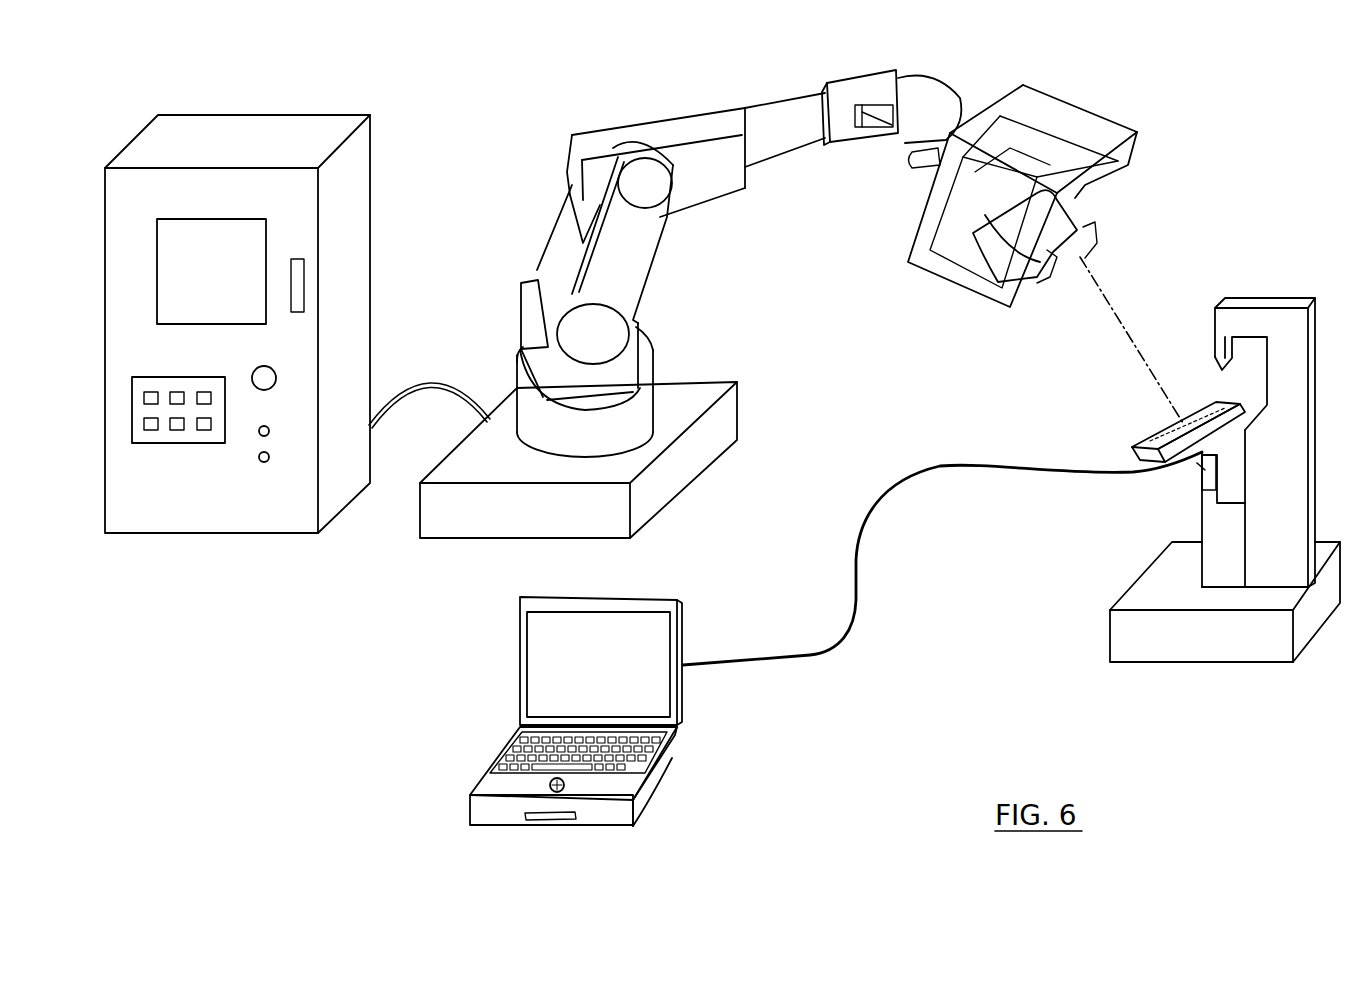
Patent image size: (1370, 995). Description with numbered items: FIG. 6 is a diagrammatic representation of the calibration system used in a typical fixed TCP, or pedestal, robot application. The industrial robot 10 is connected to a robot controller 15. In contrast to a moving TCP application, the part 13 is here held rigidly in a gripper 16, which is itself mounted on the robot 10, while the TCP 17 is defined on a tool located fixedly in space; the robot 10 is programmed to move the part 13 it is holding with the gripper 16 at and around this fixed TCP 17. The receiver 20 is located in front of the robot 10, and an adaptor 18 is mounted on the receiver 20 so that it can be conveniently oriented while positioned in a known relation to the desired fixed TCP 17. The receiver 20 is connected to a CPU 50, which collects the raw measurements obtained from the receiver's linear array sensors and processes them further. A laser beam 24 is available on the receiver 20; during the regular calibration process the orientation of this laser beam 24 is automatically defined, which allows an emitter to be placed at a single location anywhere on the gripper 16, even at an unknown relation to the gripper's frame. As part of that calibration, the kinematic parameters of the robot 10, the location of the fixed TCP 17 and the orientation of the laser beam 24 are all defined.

The robot 10 is at (677, 114).
The part 13 is at (1000, 255).
The robot controller 15 is at (235, 513).
The gripper 16 is at (1148, 125).
The TCP 17 is at (1200, 468).
The adaptor 18 is at (1197, 458).
The receiver 20 is at (1133, 447).
The laser beam 24 is at (1113, 292).
The CPU 50 is at (667, 763).